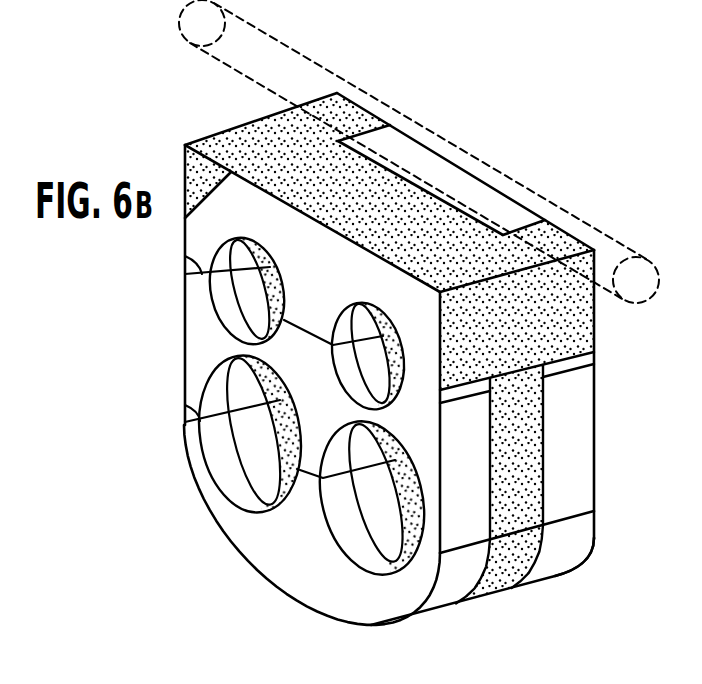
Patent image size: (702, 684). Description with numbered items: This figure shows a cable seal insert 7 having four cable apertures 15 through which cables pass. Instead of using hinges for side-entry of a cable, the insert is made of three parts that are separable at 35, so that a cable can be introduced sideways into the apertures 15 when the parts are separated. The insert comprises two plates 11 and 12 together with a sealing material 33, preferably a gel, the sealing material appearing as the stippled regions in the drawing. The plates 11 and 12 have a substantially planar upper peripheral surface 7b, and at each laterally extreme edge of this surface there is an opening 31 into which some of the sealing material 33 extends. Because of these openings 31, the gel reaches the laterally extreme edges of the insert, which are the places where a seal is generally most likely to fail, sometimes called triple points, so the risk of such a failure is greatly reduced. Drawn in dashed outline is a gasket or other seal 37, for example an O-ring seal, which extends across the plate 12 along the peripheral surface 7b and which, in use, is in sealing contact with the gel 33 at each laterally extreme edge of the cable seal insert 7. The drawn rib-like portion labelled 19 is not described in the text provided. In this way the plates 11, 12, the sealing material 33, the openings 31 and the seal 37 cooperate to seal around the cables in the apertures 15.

The cable seal insert 7 is at (618, 375).
The substantially planar peripheral surface 7b is at (428, 146).
The plate 11 is at (450, 585).
The plate 12 is at (560, 567).
The cable aperture 15 is at (252, 311).
The rib 19 is at (438, 212).
The opening 31 is at (470, 384).
The sealing material 33 is at (276, 134).
The separation location 35 is at (184, 247).
The gasket or other seal 37 is at (272, 33).